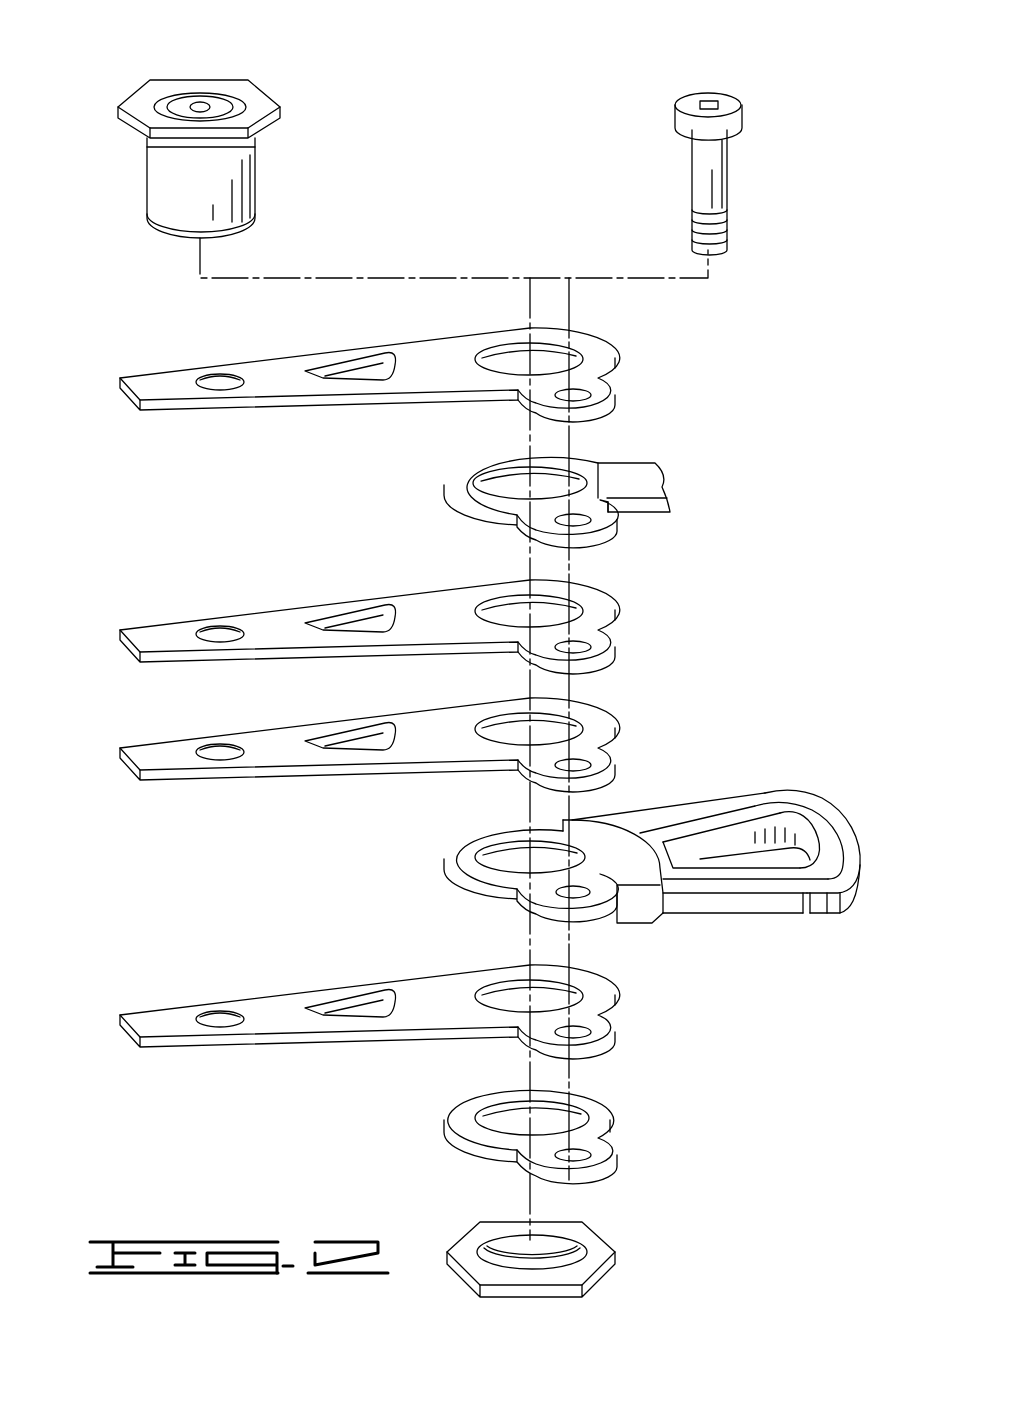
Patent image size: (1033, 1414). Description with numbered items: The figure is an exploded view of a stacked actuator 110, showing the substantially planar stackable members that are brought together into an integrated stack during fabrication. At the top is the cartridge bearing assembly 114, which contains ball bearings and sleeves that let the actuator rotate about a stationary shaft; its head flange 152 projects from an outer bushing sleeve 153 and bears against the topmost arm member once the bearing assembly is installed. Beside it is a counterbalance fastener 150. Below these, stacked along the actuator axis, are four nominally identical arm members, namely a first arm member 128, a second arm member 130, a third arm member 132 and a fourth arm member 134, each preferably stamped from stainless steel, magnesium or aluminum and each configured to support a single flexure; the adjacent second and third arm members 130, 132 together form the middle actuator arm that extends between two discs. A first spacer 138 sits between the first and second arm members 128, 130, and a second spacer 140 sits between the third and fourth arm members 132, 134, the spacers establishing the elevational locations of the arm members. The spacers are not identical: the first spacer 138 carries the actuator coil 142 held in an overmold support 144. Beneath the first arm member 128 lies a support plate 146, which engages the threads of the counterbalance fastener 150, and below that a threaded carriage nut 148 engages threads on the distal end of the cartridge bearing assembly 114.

The actuator 110 is at (152, 48).
The cartridge bearing assembly 114 is at (207, 145).
The head flange 152 is at (265, 100).
The outer bushing sleeve 153 is at (250, 172).
The counterbalance fastener 150 is at (700, 163).
The fourth arm member 134 is at (178, 372).
The second spacer 140 is at (462, 487).
The third arm member 132 is at (190, 626).
The second arm member 130 is at (190, 752).
The first spacer 138 is at (612, 821).
The actuator coil 142 is at (790, 808).
The overmold support 144 is at (822, 808).
The first arm member 128 is at (190, 1015).
The support plate 146 is at (460, 1125).
The threaded carriage nut 148 is at (462, 1250).